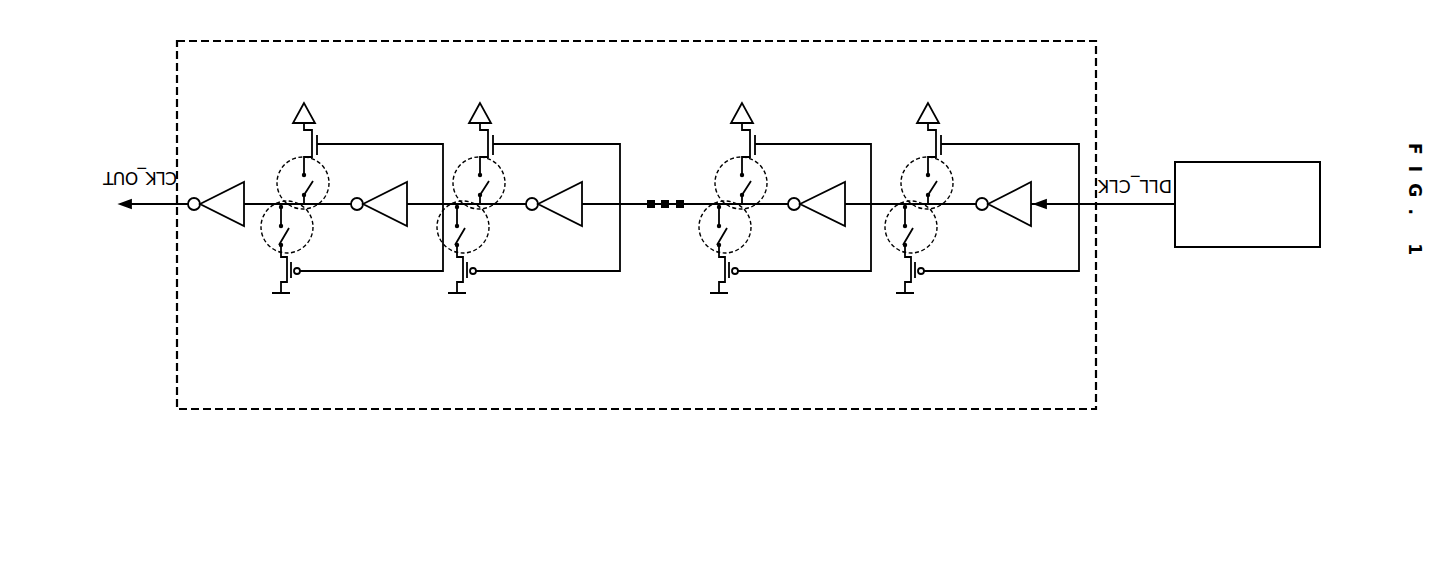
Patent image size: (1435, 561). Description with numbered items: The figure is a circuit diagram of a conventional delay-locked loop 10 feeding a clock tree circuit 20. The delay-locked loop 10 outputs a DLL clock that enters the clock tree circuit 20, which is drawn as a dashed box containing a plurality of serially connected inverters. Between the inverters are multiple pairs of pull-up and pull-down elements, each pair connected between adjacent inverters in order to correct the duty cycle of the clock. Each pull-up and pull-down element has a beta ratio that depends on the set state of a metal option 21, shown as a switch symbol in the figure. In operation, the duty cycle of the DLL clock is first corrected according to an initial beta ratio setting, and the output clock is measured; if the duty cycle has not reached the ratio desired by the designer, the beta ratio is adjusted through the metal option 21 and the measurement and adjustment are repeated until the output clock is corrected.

The delay-locked loop 10 is at (1247, 247).
The clock tree circuit 20 is at (635, 410).
The metal option 21 is at (888, 240).